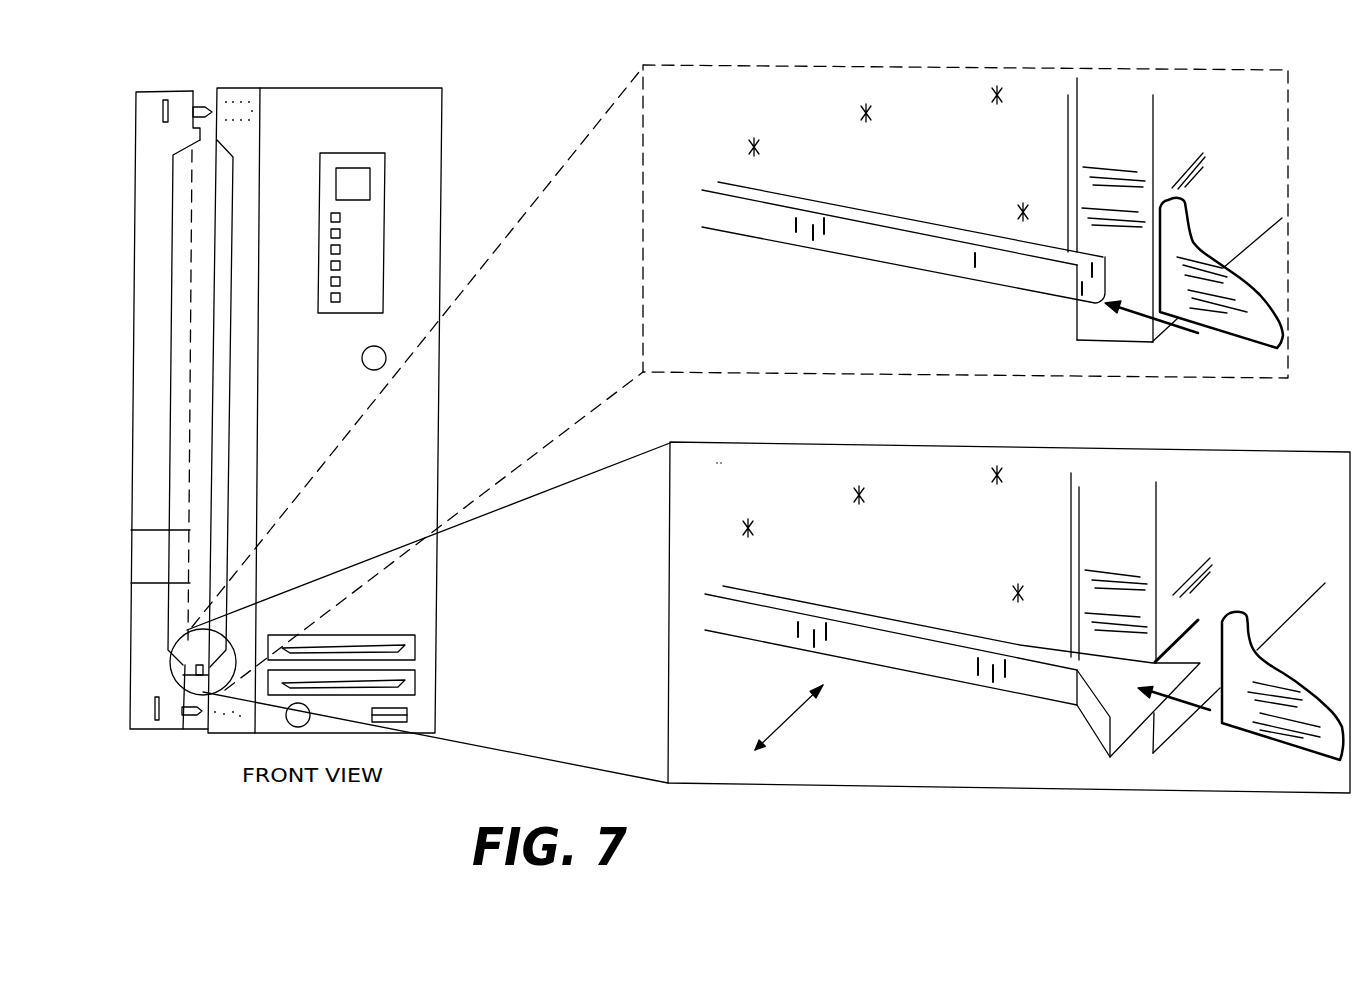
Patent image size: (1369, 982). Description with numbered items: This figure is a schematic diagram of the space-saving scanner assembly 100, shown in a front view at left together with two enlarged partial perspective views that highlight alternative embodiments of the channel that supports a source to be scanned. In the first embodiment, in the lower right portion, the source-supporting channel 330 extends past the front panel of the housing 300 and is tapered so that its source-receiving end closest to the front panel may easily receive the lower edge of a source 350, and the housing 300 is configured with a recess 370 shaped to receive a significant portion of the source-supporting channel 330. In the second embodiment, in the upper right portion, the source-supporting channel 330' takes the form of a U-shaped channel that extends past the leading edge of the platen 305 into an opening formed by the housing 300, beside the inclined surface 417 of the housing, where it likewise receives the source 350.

The space-saving scanner assembly 100 is at (268, 57).
The source-supporting channel 330 is at (672, 471).
The source-supporting channel 330' is at (950, 259).
The platen 305 is at (952, 166).
The inclined surface 417 is at (1130, 136).
The housing 300 is at (1222, 137).
The source 350 is at (1237, 285).
The recess 370 is at (1203, 607).